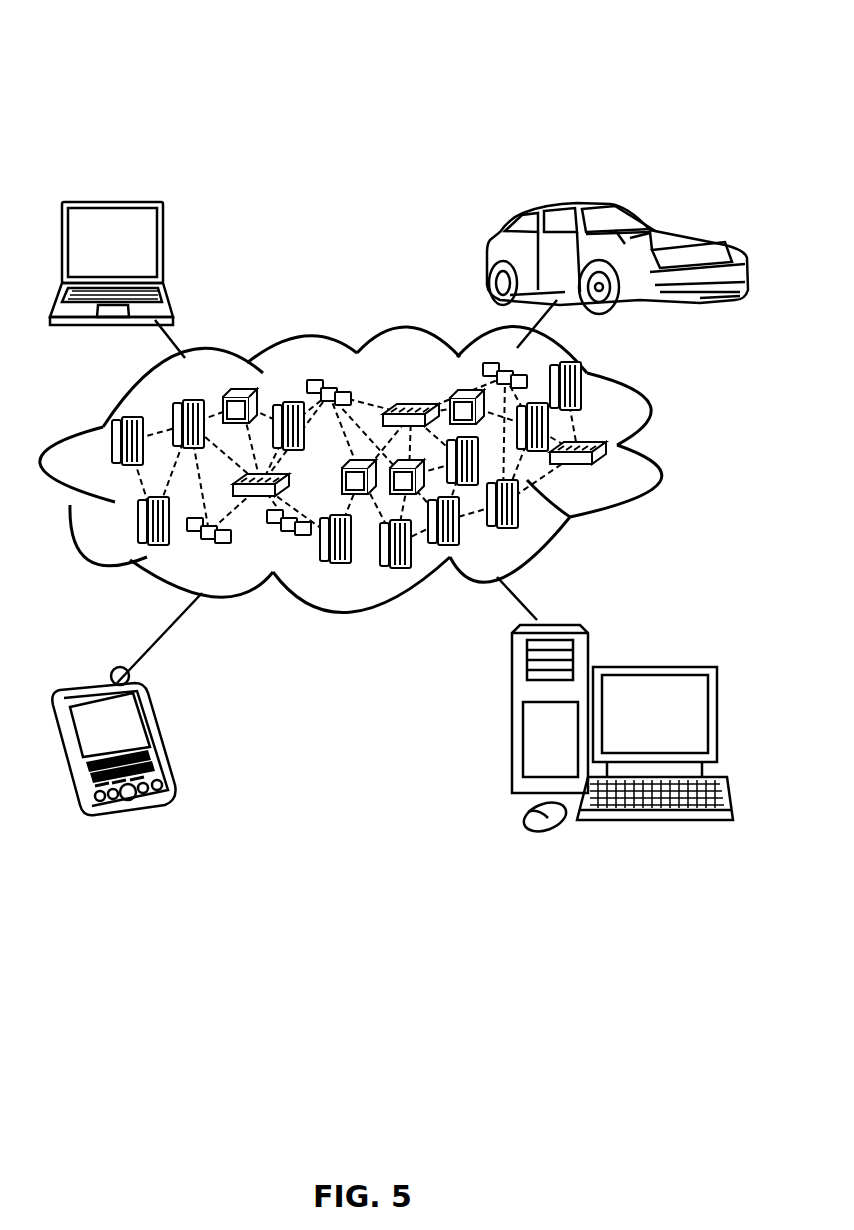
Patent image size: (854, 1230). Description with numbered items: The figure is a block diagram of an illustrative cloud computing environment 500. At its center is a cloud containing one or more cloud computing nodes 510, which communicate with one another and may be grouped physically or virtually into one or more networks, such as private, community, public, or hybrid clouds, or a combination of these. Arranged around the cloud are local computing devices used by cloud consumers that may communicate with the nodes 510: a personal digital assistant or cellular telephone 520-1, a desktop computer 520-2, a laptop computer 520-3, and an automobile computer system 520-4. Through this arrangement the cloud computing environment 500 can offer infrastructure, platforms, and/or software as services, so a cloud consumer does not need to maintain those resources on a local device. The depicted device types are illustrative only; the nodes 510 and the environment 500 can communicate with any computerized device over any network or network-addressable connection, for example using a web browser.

The cloud computing environment 500 is at (295, 57).
The cloud computing nodes 510 is at (618, 478).
The personal digital assistant or cellular telephone 520-1 is at (158, 737).
The desktop computer 520-2 is at (653, 666).
The laptop computer 520-3 is at (165, 249).
The automobile computer system 520-4 is at (493, 262).